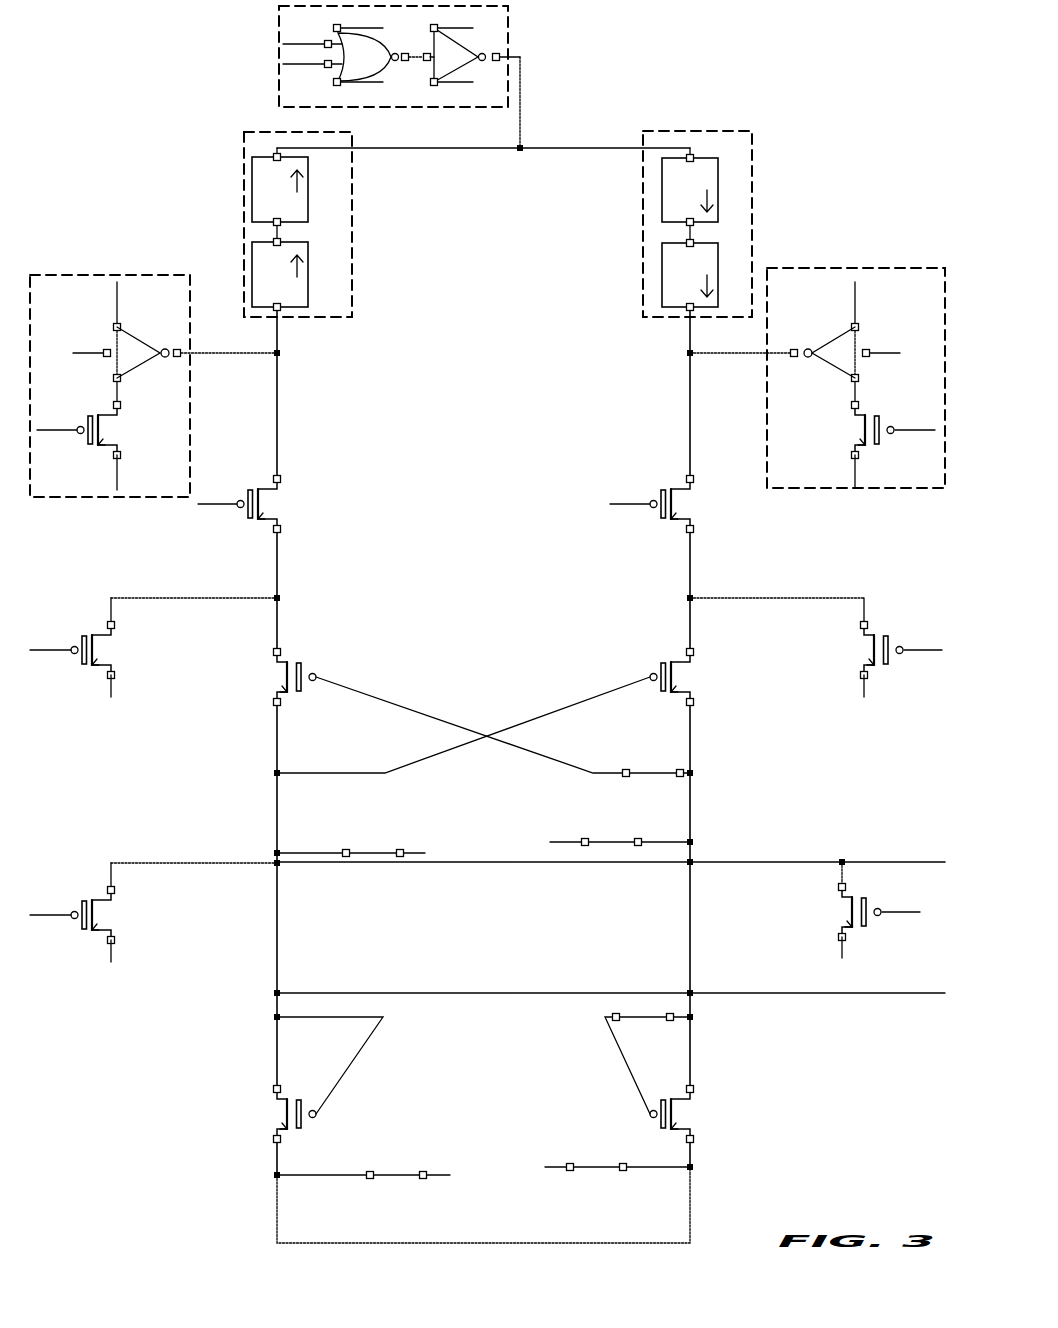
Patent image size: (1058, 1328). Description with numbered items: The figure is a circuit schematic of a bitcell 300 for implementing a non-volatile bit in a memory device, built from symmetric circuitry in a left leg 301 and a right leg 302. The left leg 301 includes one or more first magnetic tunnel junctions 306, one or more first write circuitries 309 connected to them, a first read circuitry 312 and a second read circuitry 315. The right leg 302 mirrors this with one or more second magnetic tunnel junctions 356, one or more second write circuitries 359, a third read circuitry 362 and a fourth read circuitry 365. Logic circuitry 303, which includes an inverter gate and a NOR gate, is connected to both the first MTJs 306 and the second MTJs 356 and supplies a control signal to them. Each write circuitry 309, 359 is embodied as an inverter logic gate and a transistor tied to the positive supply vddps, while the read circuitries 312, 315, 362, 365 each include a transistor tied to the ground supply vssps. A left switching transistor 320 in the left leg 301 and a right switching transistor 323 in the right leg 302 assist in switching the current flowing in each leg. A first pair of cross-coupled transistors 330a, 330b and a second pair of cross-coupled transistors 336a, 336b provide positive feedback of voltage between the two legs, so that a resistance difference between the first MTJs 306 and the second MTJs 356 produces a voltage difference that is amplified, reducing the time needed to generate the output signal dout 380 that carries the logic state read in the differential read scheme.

The bitcell 300 is at (195, 57).
The left leg 301 is at (148, 165).
The right leg 302 is at (815, 166).
The logic circuitry 303 is at (264, 72).
The first magnetic tunnel junctions 306 is at (393, 227).
The first write circuitries 309 is at (120, 266).
The first read circuitry 312 is at (87, 702).
The second read circuitry 315 is at (77, 982).
The left switching transistor 320 is at (260, 464).
The right switching transistor 323 is at (673, 460).
The first cross-coupled transistor 330a is at (328, 650).
The second cross-coupled transistor 330b is at (678, 650).
The third cross-coupled transistor 336a is at (350, 1150).
The fourth cross-coupled transistor 336b is at (743, 1150).
The second magnetic tunnel junctions 356 is at (707, 115).
The second write circuitries 359 is at (869, 256).
The third read circuitry 362 is at (932, 721).
The fourth read circuitry 365 is at (893, 963).
The output signal dout 380 is at (910, 860).